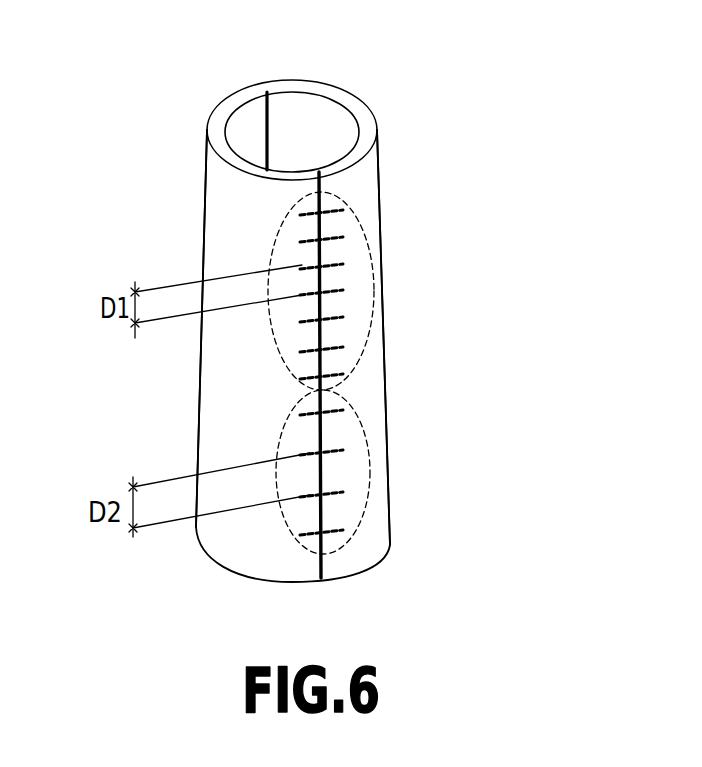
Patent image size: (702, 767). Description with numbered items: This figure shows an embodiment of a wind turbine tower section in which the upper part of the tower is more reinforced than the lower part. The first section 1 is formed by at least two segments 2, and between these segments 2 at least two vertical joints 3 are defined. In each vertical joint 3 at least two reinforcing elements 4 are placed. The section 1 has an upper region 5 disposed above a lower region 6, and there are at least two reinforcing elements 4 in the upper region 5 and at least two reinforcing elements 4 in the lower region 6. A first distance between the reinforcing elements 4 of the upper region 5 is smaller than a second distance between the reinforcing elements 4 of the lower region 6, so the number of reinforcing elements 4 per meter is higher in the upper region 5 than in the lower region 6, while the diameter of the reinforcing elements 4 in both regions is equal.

The first section 1 is at (460, 372).
The segments 2 is at (223, 371).
The vertical joint 3 is at (265, 90).
The reinforcing elements 4 is at (346, 232).
The upper region 5 is at (275, 240).
The lower region 6 is at (371, 456).